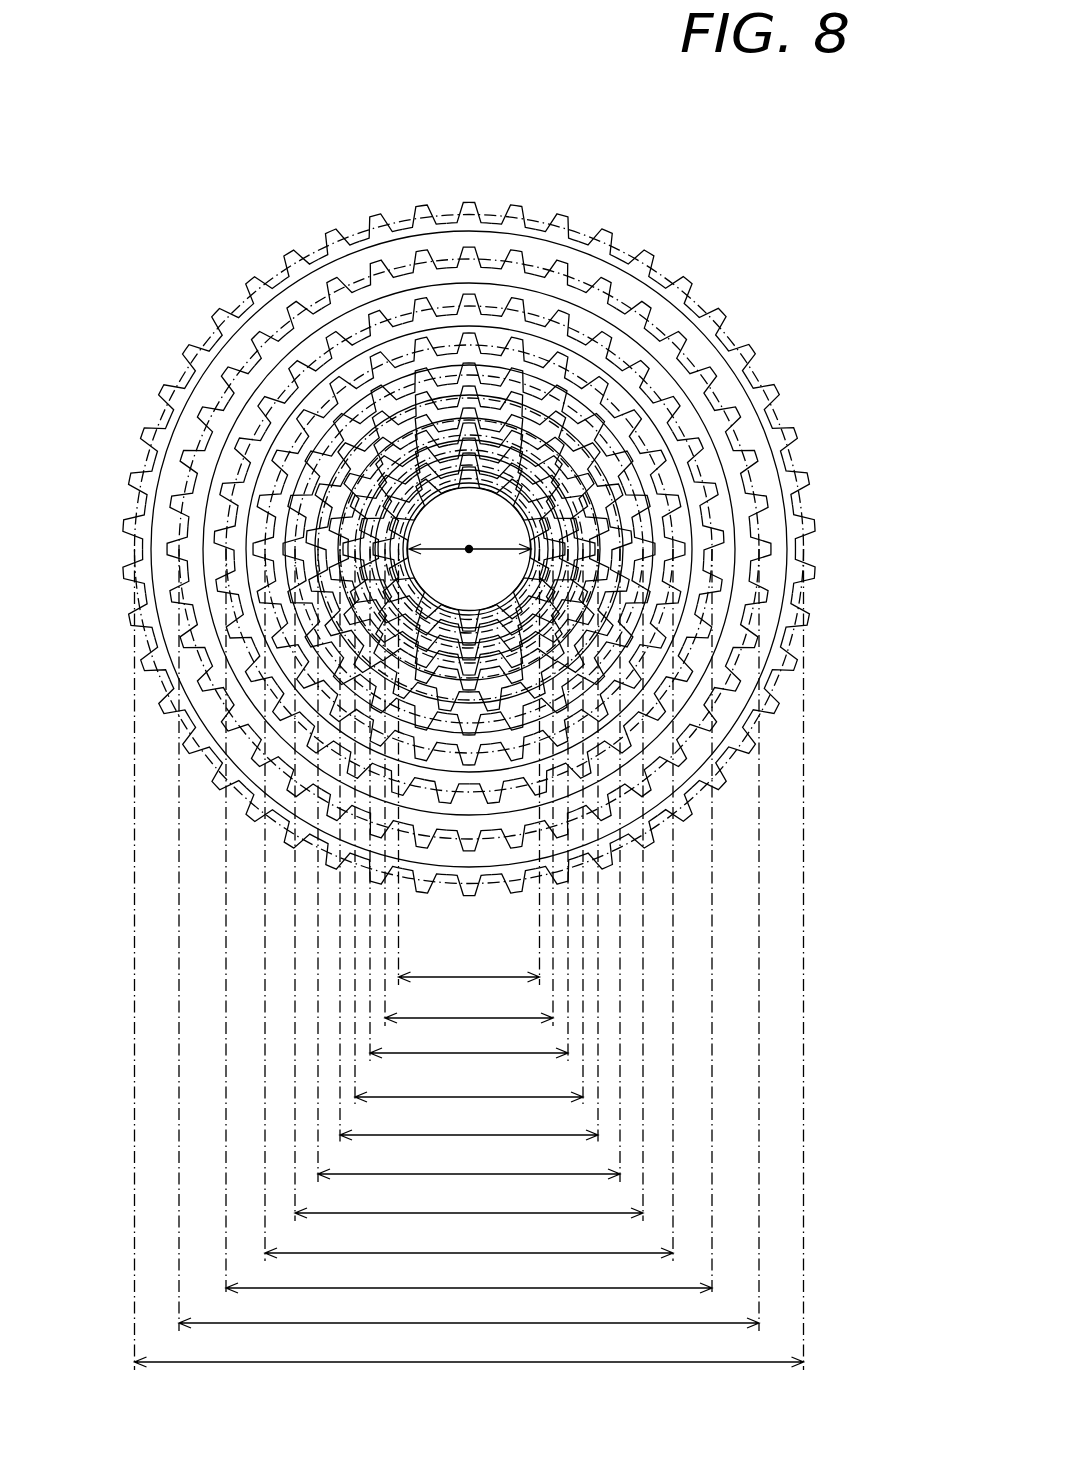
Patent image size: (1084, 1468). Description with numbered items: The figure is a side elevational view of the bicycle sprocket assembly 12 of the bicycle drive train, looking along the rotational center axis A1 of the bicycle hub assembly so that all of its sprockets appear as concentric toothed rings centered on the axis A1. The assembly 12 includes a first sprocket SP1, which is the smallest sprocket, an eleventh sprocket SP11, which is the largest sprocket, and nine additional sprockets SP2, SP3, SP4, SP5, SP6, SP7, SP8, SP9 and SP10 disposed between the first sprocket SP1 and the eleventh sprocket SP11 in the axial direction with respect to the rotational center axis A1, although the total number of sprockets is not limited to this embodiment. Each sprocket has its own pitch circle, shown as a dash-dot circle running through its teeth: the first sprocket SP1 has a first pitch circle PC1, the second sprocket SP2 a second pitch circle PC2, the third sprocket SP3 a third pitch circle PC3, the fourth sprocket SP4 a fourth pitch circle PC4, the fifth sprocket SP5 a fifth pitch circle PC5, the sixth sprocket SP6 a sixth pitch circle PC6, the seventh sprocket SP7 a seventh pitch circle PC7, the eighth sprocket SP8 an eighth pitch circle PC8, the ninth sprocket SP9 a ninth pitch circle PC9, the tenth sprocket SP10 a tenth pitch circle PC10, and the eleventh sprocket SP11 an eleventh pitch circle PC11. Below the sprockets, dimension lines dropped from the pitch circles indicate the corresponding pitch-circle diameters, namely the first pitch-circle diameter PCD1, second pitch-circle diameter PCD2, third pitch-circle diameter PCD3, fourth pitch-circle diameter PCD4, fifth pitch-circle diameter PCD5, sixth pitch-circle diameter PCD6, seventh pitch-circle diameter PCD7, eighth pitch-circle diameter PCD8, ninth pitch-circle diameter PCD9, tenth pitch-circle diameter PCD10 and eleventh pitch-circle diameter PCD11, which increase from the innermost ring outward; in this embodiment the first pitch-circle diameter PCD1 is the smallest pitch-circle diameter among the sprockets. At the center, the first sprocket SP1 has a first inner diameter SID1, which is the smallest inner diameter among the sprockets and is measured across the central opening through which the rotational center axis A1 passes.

The bicycle sprocket assembly 12 is at (128, 183).
The first sprocket SP1 is at (415, 500).
The second sprocket SP2 is at (437, 474).
The third sprocket SP3 is at (565, 612).
The fourth sprocket SP4 is at (593, 585).
The fifth sprocket SP5 is at (613, 557).
The sixth sprocket SP6 is at (630, 530).
The seventh sprocket SP7 is at (660, 525).
The eighth sprocket SP8 is at (660, 470).
The ninth sprocket SP9 is at (693, 430).
The tenth sprocket SP10 is at (699, 357).
The eleventh sprocket SP11 is at (698, 292).
The first pitch circle PC1 is at (515, 490).
The second pitch circle PC2 is at (505, 470).
The third pitch circle PC3 is at (490, 455).
The fourth pitch circle PC4 is at (427, 447).
The fifth pitch circle PC5 is at (410, 440).
The sixth pitch circle PC6 is at (385, 425).
The seventh pitch circle PC7 is at (364, 405).
The eighth pitch circle PC8 is at (330, 390).
The ninth pitch circle PC9 is at (290, 370).
The tenth pitch circle PC10 is at (262, 362).
The eleventh pitch circle PC11 is at (176, 384).
The first pitch-circle diameter PCD1 is at (469, 767).
The second pitch-circle diameter PCD2 is at (469, 787).
The third pitch-circle diameter PCD3 is at (469, 805).
The fourth pitch-circle diameter PCD4 is at (469, 827).
The fifth pitch-circle diameter PCD5 is at (469, 846).
The sixth pitch-circle diameter PCD6 is at (469, 865).
The seventh pitch-circle diameter PCD7 is at (469, 885).
The eighth pitch-circle diameter PCD8 is at (469, 905).
The ninth pitch-circle diameter PCD9 is at (469, 922).
The tenth pitch-circle diameter PCD10 is at (469, 940).
The eleventh pitch-circle diameter PCD11 is at (469, 959).
The first inner diameter SID1 is at (446, 549).
The rotational center axis A1 is at (471, 552).